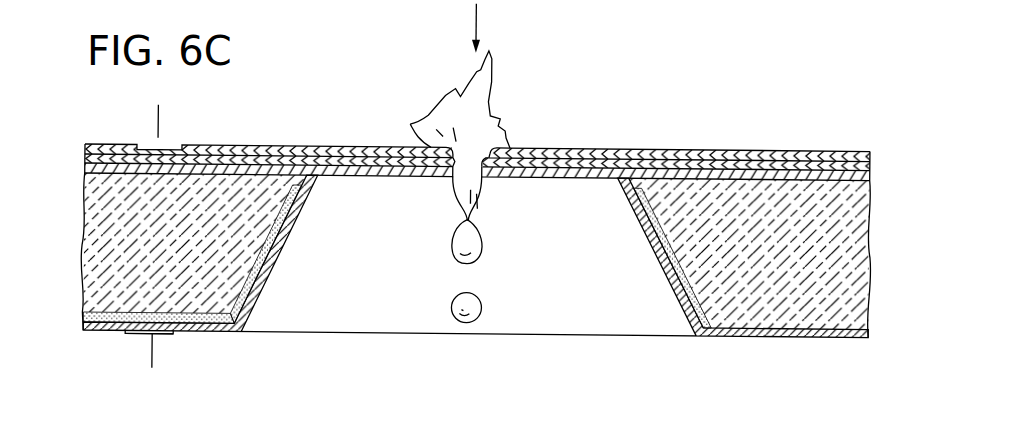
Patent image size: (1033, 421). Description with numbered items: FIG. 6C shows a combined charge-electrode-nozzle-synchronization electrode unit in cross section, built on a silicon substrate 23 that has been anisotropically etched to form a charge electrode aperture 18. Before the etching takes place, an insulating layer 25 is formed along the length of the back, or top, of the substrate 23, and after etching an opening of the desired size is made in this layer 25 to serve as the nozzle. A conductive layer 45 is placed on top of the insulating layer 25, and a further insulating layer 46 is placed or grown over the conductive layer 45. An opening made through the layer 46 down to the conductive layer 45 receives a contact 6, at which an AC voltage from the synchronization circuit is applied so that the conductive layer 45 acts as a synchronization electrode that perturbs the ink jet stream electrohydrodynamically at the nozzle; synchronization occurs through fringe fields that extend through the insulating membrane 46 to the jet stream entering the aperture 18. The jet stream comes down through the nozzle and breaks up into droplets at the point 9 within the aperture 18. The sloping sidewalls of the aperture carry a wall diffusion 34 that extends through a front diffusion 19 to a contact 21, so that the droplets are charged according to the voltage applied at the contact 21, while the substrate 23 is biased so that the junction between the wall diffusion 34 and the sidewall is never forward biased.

The contact 6 is at (152, 132).
The break-up point 9 is at (447, 280).
The aperture 18 is at (578, 305).
The front diffusion 19 is at (188, 321).
The contact 21 is at (157, 331).
The substrate 23 is at (92, 245).
The insulating layer 25 is at (88, 168).
The wall diffusion 34 is at (258, 262).
The conductive layer 45 is at (86, 159).
The insulating layer 46 is at (86, 144).